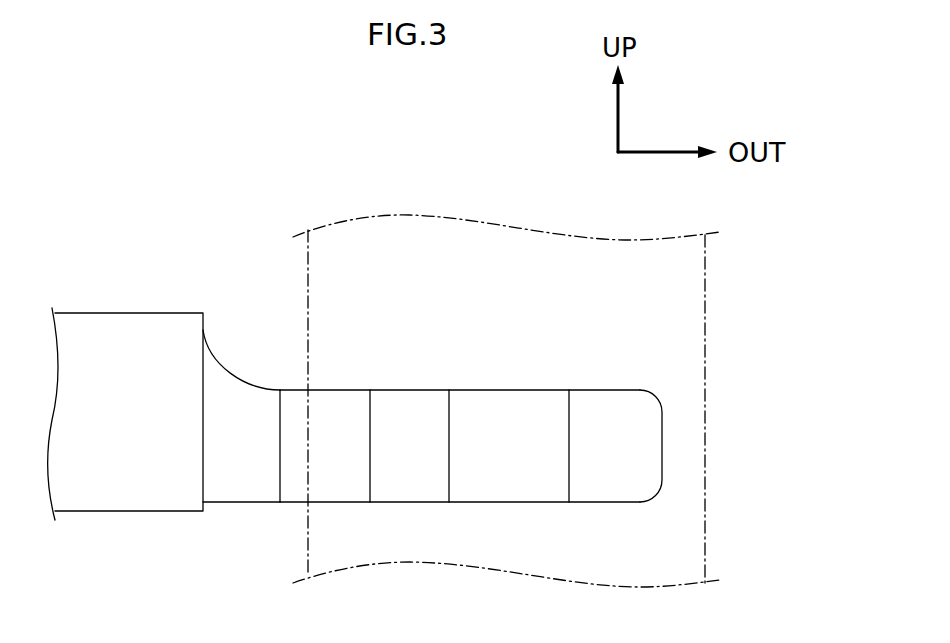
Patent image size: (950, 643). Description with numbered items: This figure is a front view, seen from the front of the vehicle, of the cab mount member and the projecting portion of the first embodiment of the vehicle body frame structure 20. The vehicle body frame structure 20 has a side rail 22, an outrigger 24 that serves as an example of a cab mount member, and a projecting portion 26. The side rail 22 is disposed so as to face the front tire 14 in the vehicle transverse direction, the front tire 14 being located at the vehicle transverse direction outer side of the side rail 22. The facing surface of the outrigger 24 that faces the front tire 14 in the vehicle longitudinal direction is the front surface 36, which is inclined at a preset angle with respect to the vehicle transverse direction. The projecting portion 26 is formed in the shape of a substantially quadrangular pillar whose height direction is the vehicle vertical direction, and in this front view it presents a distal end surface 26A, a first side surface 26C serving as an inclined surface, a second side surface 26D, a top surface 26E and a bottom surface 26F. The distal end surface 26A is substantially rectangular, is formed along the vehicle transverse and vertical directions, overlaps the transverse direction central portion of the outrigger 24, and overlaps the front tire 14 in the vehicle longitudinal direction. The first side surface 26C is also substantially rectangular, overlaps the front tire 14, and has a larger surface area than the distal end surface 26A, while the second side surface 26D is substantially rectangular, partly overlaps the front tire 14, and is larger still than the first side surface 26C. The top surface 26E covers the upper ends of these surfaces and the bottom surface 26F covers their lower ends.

The front tire 14 is at (307, 298).
The vehicle body frame structure 20 is at (221, 230).
The side rail 22 is at (117, 310).
The outrigger 24 is at (610, 385).
The projecting portion 26 is at (470, 486).
The distal end surface 26A is at (408, 420).
The first side surface 26C is at (500, 420).
The second side surface 26D is at (335, 420).
The top surface 26E is at (532, 391).
The bottom surface 26F is at (408, 502).
The front surface 36 is at (253, 475).